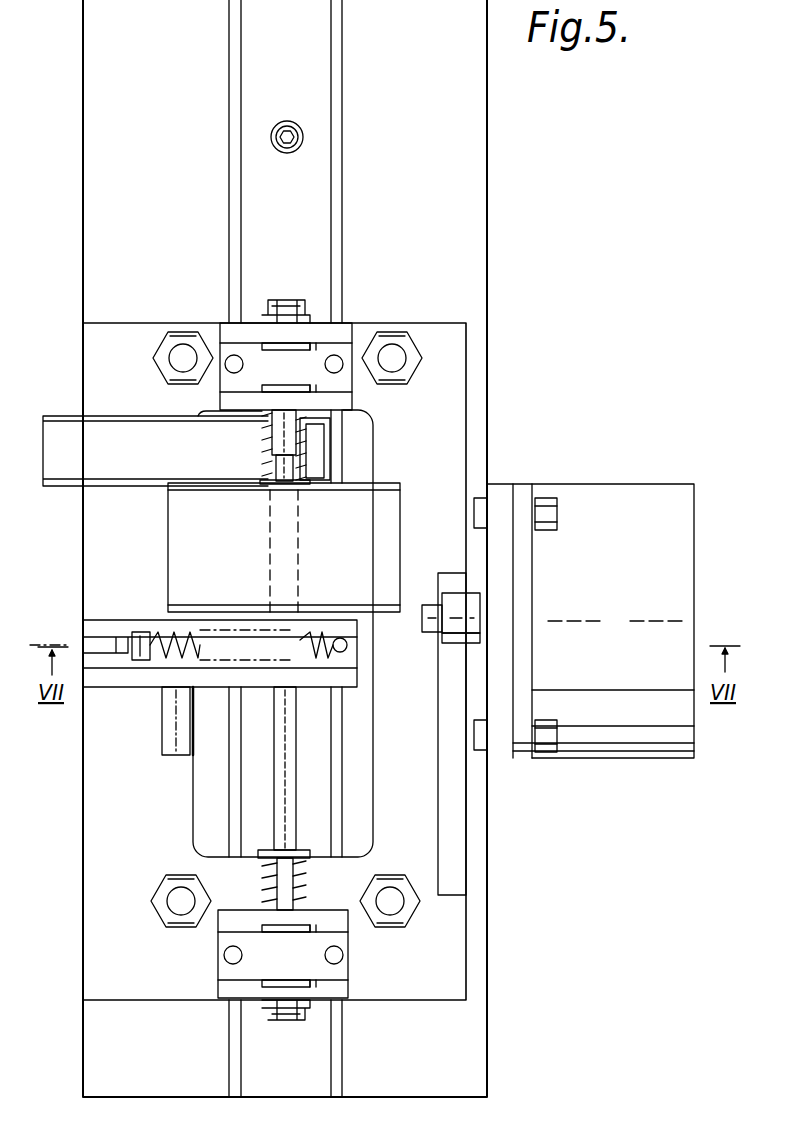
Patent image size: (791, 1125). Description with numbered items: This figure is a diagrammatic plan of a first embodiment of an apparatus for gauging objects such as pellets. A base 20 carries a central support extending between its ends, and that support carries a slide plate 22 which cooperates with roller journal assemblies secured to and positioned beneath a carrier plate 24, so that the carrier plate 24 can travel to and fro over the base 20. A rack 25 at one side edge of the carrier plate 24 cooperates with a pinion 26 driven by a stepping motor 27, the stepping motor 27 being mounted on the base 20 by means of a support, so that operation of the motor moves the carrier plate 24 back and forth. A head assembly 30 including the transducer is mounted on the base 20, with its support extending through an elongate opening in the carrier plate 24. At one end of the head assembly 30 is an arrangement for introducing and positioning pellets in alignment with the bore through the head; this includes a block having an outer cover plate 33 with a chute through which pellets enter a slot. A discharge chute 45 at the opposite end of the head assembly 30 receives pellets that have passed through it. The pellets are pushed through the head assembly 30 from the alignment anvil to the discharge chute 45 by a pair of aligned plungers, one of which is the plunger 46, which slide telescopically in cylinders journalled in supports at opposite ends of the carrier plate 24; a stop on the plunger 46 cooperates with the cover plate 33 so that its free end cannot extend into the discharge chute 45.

The base 20 is at (460, 1050).
The slide plate 22 is at (313, 1045).
The carrier plate 24 is at (438, 940).
The rack 25 is at (452, 866).
The pinion 26 is at (470, 608).
The stepping motor 27 is at (633, 733).
The head assembly 30 is at (180, 543).
The cover plate 33 is at (105, 677).
The discharge chute 45 is at (58, 433).
The plunger 46 is at (280, 772).